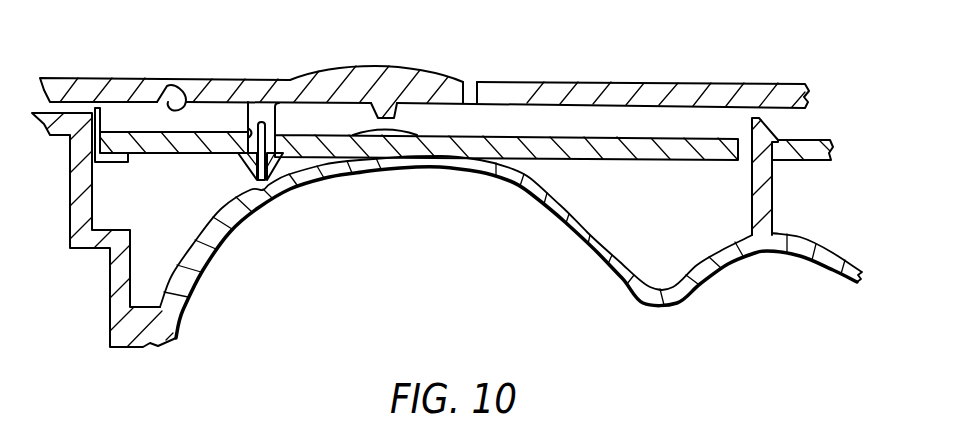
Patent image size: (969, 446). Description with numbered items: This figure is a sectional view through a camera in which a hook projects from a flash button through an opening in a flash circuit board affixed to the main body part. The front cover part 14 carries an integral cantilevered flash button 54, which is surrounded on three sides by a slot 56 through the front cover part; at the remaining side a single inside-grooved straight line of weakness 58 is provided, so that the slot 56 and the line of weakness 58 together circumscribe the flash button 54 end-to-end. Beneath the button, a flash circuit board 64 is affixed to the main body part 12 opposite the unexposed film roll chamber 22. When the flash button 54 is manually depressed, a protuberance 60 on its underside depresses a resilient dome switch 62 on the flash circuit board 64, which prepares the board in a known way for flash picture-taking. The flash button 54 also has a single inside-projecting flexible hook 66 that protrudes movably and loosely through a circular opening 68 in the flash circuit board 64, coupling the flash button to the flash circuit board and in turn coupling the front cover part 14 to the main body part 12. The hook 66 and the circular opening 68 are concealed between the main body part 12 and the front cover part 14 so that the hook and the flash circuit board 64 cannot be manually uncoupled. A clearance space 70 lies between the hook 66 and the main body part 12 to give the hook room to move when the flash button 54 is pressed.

The main body part 12 is at (766, 92).
The front cover part 14 is at (822, 238).
The unexposed film roll chamber 22 is at (440, 283).
The flash button 54 is at (353, 66).
The slot 56 is at (470, 82).
The line of weakness 58 is at (185, 100).
The protuberance 60 is at (403, 114).
The dome switch 62 is at (368, 133).
The flash circuit board 64 is at (701, 154).
The hook 66 is at (244, 160).
The circular opening 68 is at (249, 130).
The clearance space 70 is at (275, 184).